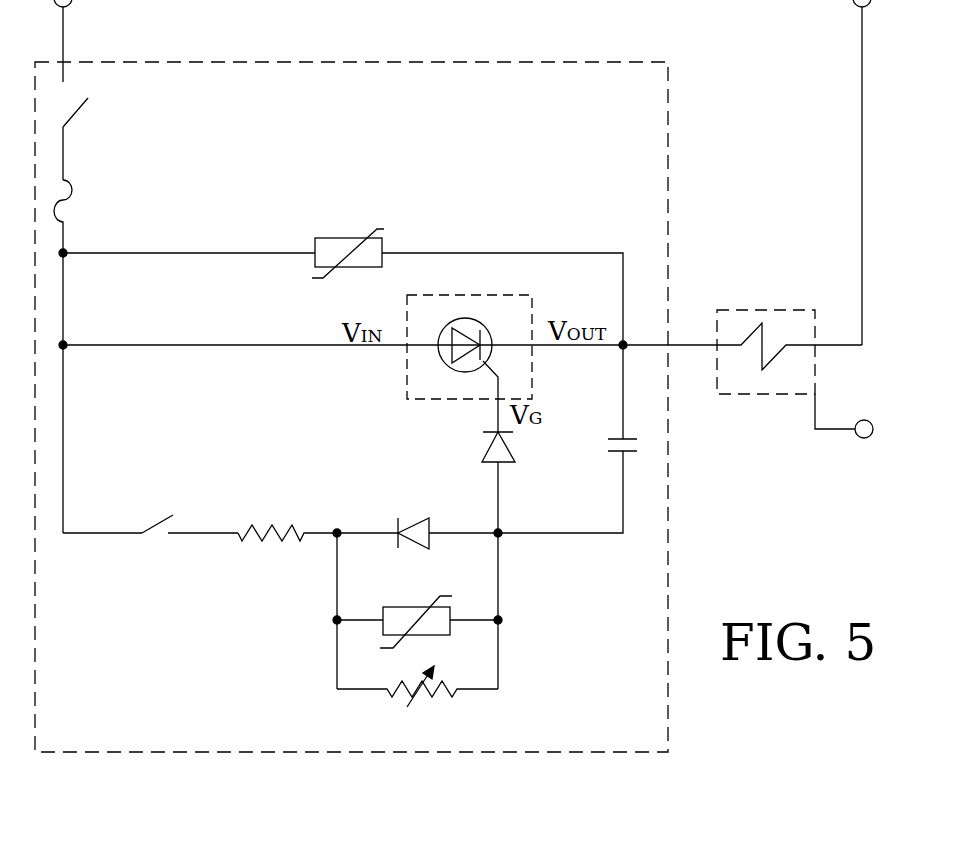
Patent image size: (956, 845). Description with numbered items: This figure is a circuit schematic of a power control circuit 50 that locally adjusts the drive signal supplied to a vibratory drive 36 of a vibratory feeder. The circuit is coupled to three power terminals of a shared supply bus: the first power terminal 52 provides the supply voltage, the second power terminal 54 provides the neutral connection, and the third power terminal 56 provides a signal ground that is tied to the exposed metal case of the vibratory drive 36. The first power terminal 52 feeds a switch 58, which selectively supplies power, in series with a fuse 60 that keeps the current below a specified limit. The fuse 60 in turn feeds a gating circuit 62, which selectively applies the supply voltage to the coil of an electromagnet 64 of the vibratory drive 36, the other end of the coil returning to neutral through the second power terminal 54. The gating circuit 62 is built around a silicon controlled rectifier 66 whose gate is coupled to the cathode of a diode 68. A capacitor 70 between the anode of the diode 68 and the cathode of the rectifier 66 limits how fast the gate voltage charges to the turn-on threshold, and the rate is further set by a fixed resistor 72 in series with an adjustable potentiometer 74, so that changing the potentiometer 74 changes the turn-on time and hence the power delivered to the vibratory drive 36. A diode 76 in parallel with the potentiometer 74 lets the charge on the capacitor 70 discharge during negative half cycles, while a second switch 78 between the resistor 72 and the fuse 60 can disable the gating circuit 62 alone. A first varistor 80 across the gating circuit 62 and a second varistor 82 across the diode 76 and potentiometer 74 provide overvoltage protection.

The vibratory drive 36 is at (747, 398).
The power control circuit 50 is at (668, 140).
The first power terminal 52 is at (64, 27).
The second power terminal 54 is at (862, 57).
The third power terminal 56 is at (838, 433).
The switch 58 is at (78, 107).
The fuse 60 is at (70, 187).
The gating circuit 62 is at (480, 294).
The electromagnet 64 is at (753, 333).
The silicon controlled rectifier 66 is at (447, 368).
The diode 68 is at (515, 456).
The capacitor 70 is at (630, 453).
The resistor 72 is at (250, 541).
The potentiometer 74 is at (437, 700).
The diode 76 is at (420, 516).
The switch 78 is at (155, 538).
The first varistor 80 is at (340, 236).
The second varistor 82 is at (415, 605).